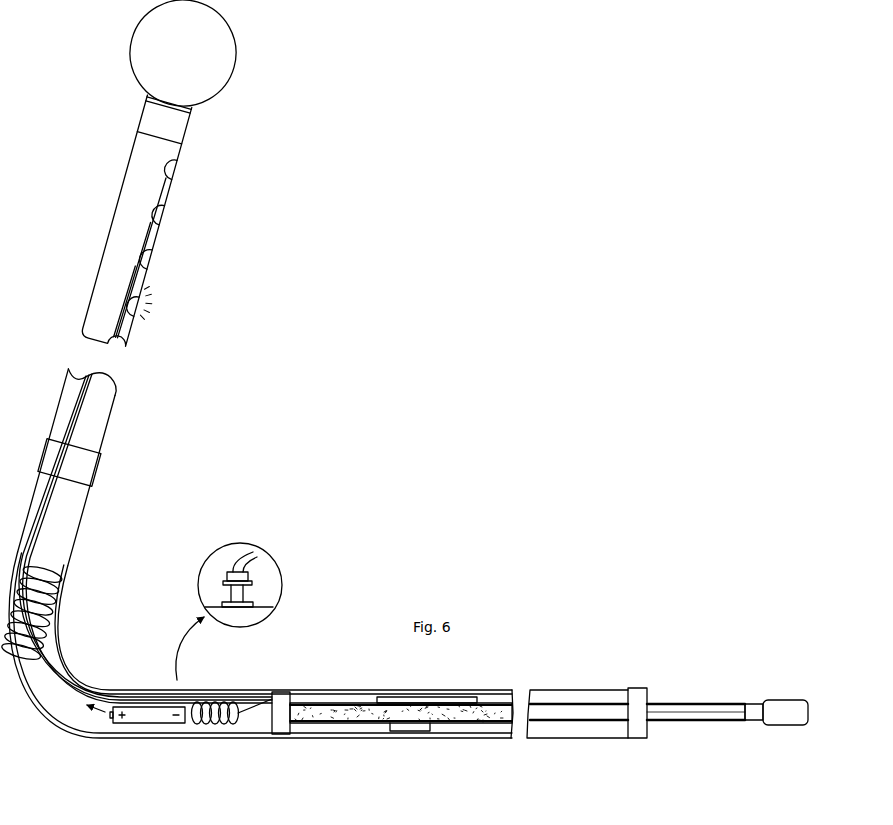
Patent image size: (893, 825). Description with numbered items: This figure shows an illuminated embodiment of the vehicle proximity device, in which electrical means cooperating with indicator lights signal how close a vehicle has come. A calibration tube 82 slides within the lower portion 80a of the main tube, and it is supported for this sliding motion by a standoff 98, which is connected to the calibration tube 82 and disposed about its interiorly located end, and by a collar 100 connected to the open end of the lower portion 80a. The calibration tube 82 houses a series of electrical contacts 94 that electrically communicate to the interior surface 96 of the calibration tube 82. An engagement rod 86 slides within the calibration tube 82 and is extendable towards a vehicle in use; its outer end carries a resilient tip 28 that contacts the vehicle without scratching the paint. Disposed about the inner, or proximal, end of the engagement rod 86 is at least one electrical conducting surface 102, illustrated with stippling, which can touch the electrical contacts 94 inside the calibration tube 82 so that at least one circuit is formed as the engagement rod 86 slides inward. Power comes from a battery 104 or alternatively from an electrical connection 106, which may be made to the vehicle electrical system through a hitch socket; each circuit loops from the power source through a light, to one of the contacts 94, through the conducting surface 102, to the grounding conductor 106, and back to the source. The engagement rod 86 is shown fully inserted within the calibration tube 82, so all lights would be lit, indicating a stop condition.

The tip 28 is at (781, 718).
The lower portion of main tube 80a is at (250, 687).
The calibration tube 82 is at (714, 698).
The engagement rod 86 is at (757, 701).
The electrical contacts 94 is at (378, 697).
The interior surface 96 is at (550, 705).
The standoff 98 is at (280, 718).
The collar 100 is at (637, 731).
The electrical conducting surface 102 is at (325, 740).
The battery 104 is at (150, 724).
The electrical connection 106 is at (100, 447).